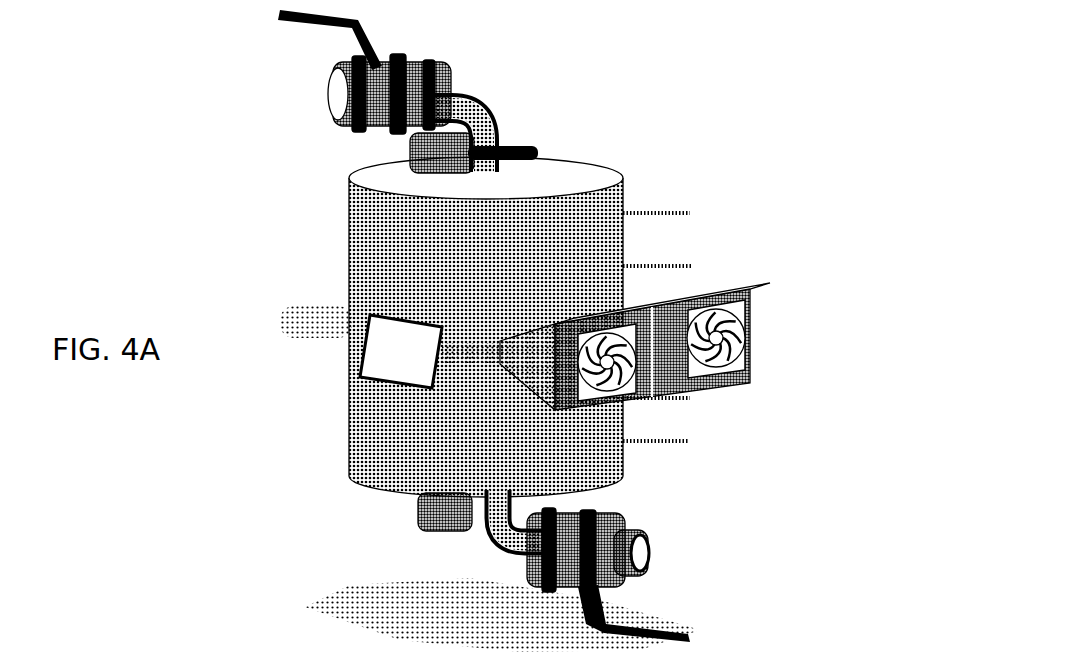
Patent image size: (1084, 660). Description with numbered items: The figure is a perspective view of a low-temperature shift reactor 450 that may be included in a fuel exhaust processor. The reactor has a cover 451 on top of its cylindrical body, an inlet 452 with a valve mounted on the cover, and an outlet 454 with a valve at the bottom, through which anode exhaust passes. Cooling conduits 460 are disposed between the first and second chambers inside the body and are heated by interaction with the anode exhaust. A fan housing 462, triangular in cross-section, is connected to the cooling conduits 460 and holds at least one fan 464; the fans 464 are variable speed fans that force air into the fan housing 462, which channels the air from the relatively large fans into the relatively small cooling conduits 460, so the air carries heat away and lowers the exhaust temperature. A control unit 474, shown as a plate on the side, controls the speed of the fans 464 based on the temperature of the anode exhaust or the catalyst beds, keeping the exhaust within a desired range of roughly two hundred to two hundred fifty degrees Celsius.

The low-temperature shift reactor 450 is at (720, 93).
The cover 451 is at (560, 170).
The inlet 452 is at (478, 121).
The outlet 454 is at (500, 527).
The cooling conduits 460 is at (316, 318).
The fan housing 462 is at (657, 313).
The fan 464 is at (728, 325).
The control unit 474 is at (416, 372).